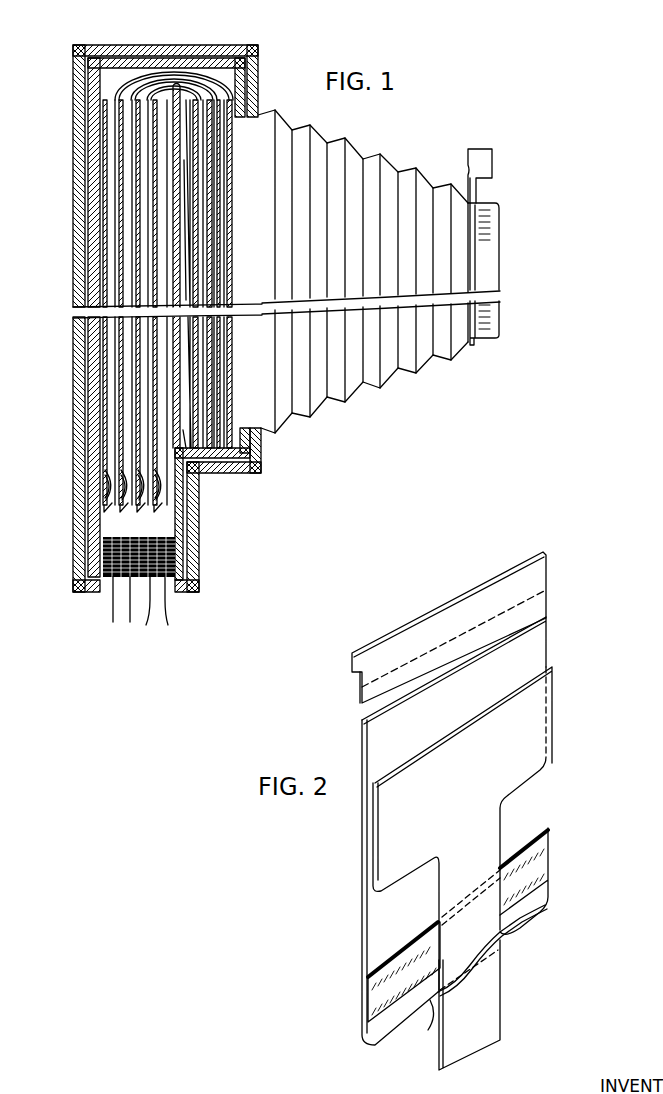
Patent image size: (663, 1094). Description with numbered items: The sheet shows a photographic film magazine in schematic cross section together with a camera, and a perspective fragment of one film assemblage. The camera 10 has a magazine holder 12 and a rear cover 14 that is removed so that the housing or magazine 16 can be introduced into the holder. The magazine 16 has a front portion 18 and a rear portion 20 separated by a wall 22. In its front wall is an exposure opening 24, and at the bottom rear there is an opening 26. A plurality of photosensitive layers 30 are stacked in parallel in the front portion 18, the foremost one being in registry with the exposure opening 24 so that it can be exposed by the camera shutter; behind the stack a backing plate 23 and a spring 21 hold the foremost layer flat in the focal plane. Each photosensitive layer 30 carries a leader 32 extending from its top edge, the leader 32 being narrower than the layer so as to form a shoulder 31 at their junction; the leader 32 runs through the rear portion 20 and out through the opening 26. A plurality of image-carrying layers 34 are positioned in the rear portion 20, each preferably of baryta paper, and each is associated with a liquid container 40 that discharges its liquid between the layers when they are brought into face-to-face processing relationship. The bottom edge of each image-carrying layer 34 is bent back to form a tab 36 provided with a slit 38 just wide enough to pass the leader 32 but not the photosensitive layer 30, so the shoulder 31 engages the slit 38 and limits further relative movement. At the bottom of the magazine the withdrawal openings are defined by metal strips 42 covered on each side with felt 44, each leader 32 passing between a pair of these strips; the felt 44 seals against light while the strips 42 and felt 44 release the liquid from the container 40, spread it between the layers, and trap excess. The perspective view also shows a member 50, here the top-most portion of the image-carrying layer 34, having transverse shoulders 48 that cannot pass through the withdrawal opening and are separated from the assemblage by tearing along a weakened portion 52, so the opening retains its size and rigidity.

In FIG. 1, the camera 10 is at (393, 370).
In FIG. 1, the magazine holder 12 is at (175, 47).
In FIG. 1, the cover 14 is at (78, 150).
In FIG. 1, the housing or magazine 16 is at (188, 516).
In FIG. 1, the front portion 18 is at (243, 78).
In FIG. 1, the rear portion 20 is at (90, 258).
In FIG. 1, the spring 21 is at (187, 222).
In FIG. 1, the wall 22 is at (178, 418).
In FIG. 1, the backing plate 23 is at (199, 287).
In FIG. 1, the exposure opening 24 is at (265, 222).
In FIG. 1, the opening 26 is at (175, 596).
In FIG. 1, the photosensitive layer 30 is at (234, 187).
In FIG. 2, the photosensitive layer 30 is at (371, 838).
In FIG. 2, the shoulder 31 is at (523, 787).
In FIG. 1, the leader 32 is at (123, 80).
In FIG. 2, the leader 32 is at (498, 1016).
In FIG. 1, the image-carrying layer 34 is at (103, 220).
In FIG. 2, the image-carrying layer 34 is at (395, 910).
In FIG. 1, the bent portion or tab 36 is at (112, 525).
In FIG. 2, the bent portion or tab 36 is at (428, 1030).
In FIG. 2, the slit 38 is at (490, 940).
In FIG. 1, the container 40 is at (117, 478).
In FIG. 2, the container 40 is at (388, 985).
In FIG. 1, the strip of metal 42 is at (122, 612).
In FIG. 1, the felt 44 is at (148, 615).
In FIG. 2, the shoulders 48 is at (352, 660).
In FIG. 2, the member 50 is at (358, 695).
In FIG. 2, the weakened portion 52 is at (423, 650).